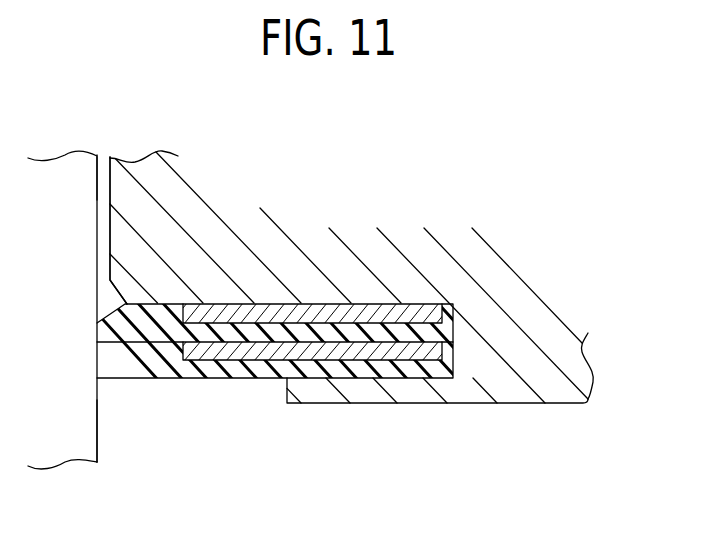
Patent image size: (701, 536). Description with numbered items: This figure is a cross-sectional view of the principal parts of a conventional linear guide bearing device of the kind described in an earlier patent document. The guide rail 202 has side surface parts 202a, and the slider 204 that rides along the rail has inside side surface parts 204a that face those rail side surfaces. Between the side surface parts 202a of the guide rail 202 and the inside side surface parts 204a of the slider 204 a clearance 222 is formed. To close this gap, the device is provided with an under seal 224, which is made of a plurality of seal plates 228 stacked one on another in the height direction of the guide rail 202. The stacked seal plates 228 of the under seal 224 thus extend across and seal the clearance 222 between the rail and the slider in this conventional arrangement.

The guide rail 202 is at (63, 453).
The side surface parts of the guide rail 202a is at (97, 437).
The slider 204 is at (573, 363).
The inside side surface parts of the slider 204a is at (103, 207).
The clearance 222 is at (102, 152).
The under seal 224 is at (260, 395).
The seal plates 228 is at (176, 370).